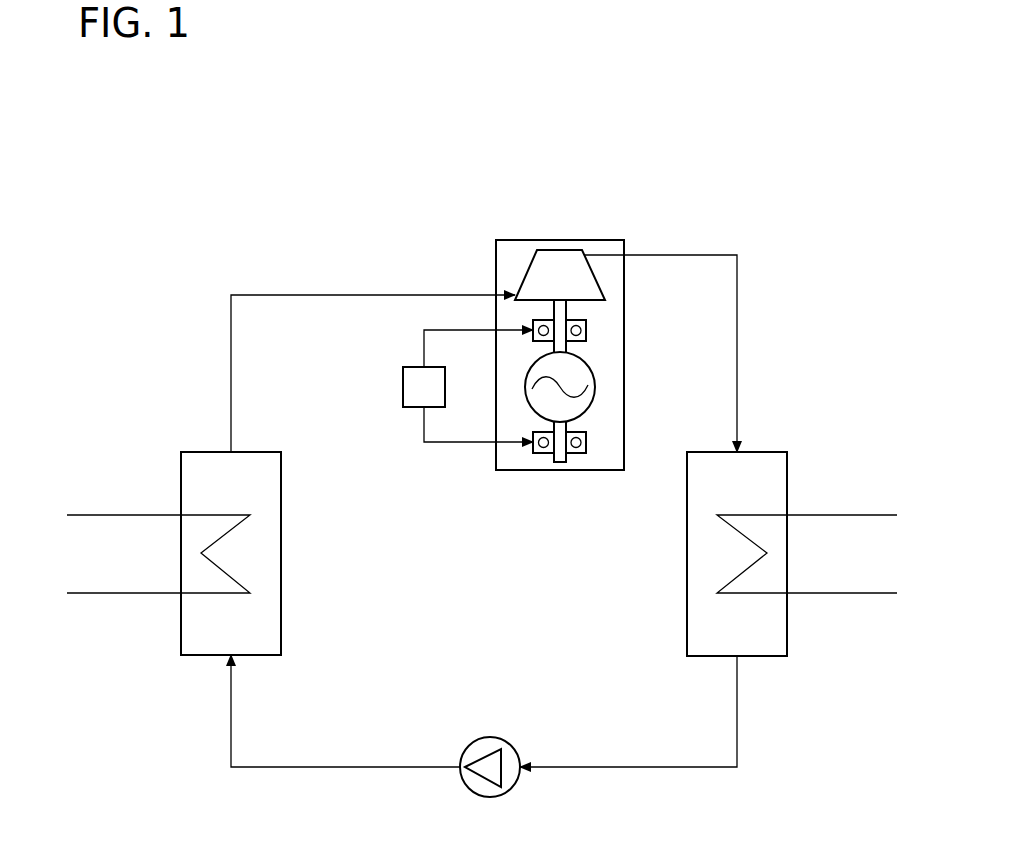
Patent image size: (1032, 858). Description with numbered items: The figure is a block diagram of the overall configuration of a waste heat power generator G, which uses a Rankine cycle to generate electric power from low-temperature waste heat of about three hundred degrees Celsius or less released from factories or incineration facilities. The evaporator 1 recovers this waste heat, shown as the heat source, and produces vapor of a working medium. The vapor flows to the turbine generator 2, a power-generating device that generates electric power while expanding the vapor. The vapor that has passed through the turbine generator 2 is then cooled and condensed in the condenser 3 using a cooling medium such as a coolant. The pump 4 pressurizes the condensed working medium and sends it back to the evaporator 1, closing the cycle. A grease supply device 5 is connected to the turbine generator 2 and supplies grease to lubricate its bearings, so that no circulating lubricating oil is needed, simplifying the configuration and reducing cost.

The evaporator 1 is at (181, 476).
The turbine generator 2 is at (496, 266).
The condenser 3 is at (766, 452).
The pump 4 is at (467, 748).
The grease supply device 5 is at (403, 390).
The waste heat power generator G is at (807, 207).